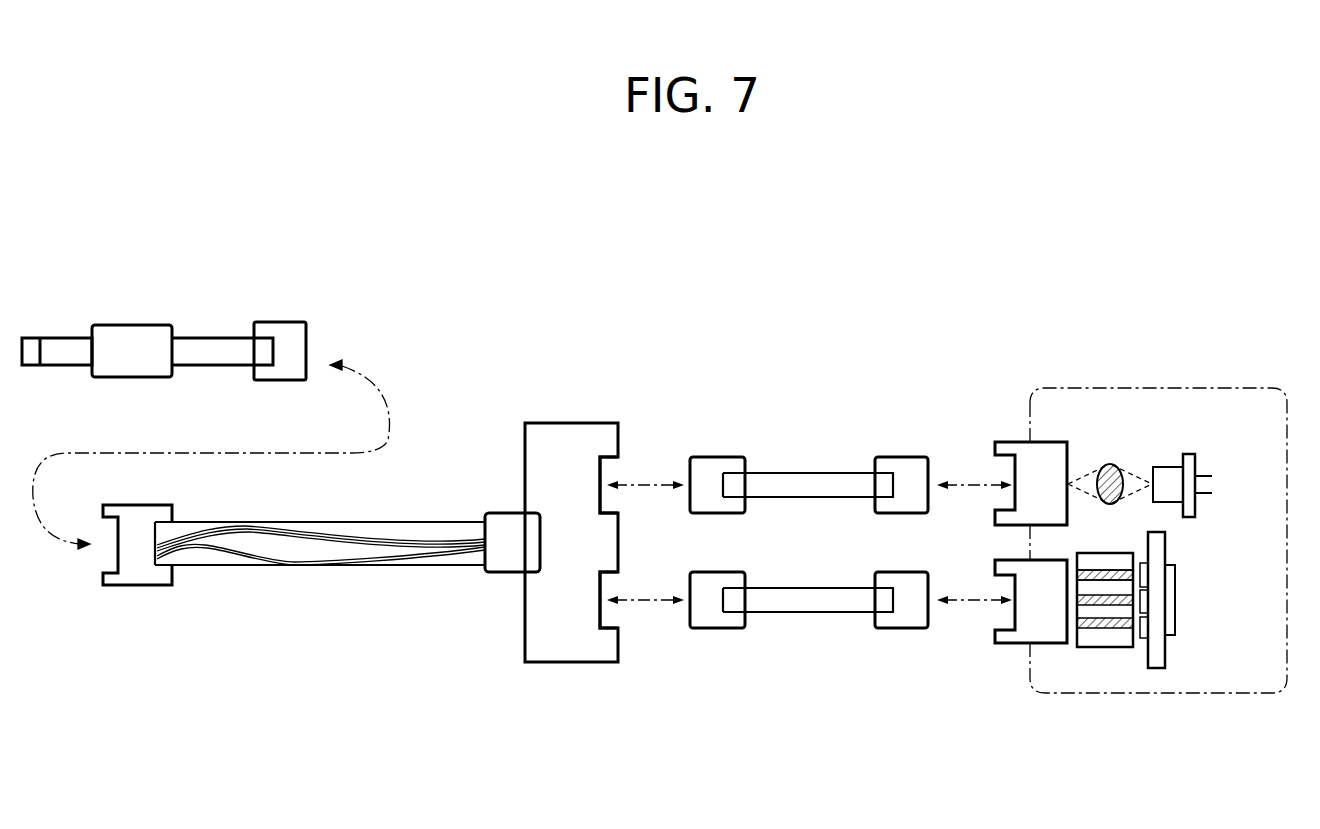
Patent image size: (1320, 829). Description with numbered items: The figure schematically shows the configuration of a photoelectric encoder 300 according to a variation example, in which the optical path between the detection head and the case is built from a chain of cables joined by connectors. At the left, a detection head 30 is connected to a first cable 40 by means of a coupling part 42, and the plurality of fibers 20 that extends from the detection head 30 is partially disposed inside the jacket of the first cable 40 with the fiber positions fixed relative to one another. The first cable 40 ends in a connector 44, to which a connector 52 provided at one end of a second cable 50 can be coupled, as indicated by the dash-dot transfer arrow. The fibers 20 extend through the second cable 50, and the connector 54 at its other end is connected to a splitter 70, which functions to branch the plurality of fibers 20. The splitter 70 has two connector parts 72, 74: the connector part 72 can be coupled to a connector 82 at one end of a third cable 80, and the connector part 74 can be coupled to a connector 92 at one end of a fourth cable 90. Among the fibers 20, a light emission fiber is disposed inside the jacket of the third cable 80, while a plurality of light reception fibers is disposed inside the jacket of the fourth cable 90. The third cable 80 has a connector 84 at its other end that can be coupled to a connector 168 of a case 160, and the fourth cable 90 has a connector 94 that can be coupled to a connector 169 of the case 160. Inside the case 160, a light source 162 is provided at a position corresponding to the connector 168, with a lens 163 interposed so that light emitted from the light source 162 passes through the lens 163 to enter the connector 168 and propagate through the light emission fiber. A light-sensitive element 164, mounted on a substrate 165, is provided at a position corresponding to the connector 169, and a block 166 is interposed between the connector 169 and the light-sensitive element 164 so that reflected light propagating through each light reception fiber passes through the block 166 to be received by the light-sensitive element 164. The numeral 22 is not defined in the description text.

The photoelectric encoder 300 is at (1076, 229).
The case 160 is at (1165, 388).
The detection head 30 is at (57, 362).
The first cable 40 is at (213, 367).
The coupling part 42 is at (125, 333).
The connector 44 is at (285, 325).
The fibers 20 is at (338, 532).
The second cable 50 is at (412, 568).
The connector 52 is at (137, 577).
The connector 54 is at (502, 525).
The splitter 70 is at (565, 647).
The connector part 72 is at (617, 460).
The connector part 74 is at (620, 620).
The third cable 80 is at (815, 480).
The connector 82 is at (712, 463).
The connector 84 is at (902, 460).
The fourth cable 90 is at (810, 600).
The connector 92 is at (713, 613).
The connector 94 is at (902, 617).
The connector 168 is at (1017, 445).
The connector 169 is at (1015, 642).
The lens 163 is at (1112, 467).
The light source 162 is at (1165, 473).
The fiber layer 22 is at (1103, 573).
The block 166 is at (1108, 648).
The light-sensitive element 164 is at (1138, 640).
The substrate 165 is at (1167, 653).